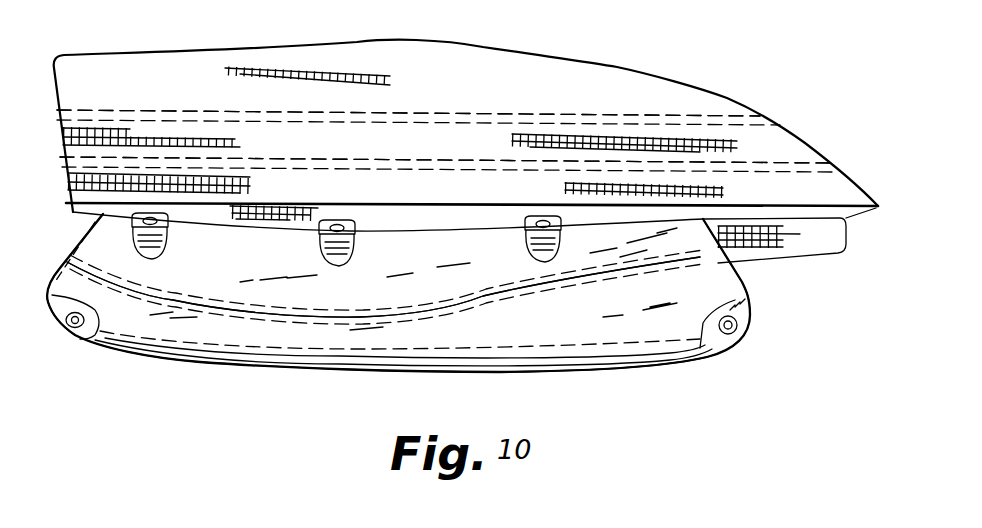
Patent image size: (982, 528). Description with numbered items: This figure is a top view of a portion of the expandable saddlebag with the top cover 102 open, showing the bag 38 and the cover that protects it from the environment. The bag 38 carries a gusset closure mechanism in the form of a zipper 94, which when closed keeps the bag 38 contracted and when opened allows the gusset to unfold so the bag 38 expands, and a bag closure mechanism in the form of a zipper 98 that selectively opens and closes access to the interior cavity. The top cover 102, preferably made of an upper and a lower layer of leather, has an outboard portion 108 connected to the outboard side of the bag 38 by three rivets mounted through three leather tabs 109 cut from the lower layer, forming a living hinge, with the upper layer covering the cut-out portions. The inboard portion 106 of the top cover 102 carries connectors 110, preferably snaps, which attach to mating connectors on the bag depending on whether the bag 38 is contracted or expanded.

The bag 38 is at (198, 60).
The zipper 98 is at (517, 96).
The zipper 94 is at (467, 167).
The inboard portion 106 is at (668, 322).
The outboard portion 108 is at (511, 277).
The top cover 102 is at (243, 371).
The connectors 110 is at (62, 336).
The leather tabs 109 is at (172, 218).